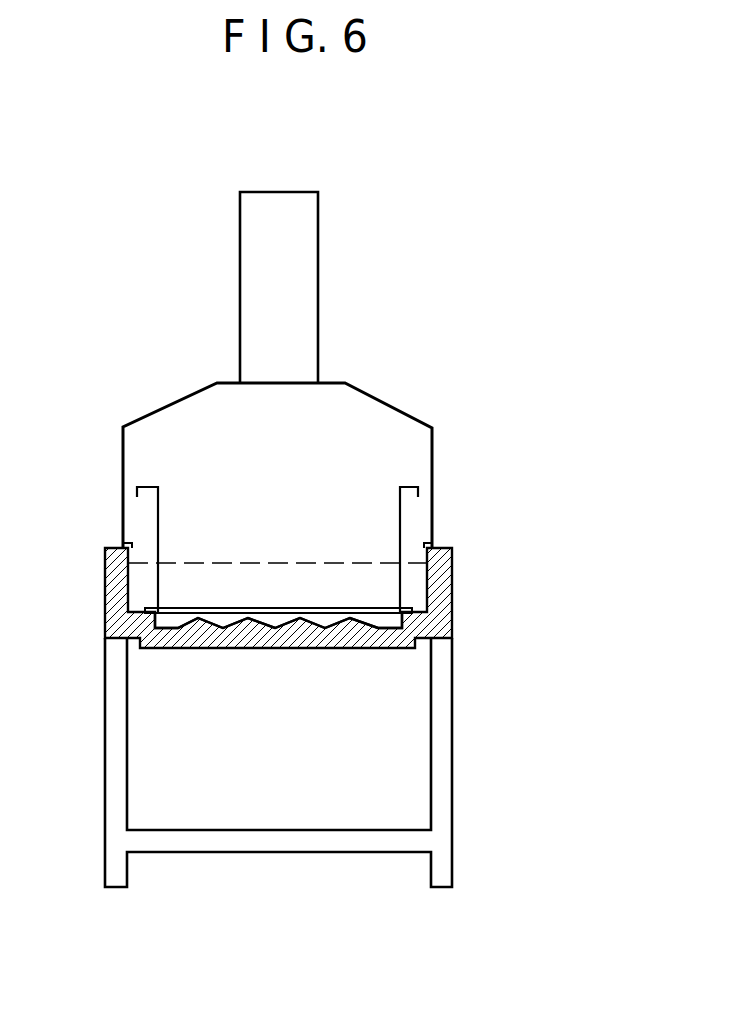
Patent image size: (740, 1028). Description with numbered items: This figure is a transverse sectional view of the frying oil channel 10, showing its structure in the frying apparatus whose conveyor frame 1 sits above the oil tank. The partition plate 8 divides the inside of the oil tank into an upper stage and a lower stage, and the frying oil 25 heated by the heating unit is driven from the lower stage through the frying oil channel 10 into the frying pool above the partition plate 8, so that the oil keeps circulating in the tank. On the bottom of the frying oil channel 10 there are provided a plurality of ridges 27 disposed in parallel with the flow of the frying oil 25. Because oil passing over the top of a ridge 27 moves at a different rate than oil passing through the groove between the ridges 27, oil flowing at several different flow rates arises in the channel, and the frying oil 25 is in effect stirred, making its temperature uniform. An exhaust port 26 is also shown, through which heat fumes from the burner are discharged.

The conveyor frame 1 is at (405, 412).
The partition plate 8 is at (200, 605).
The frying oil channel 10 is at (390, 621).
The frying oil 25 is at (314, 575).
The exhaust port 26 is at (284, 195).
The ridges 27 is at (178, 645).